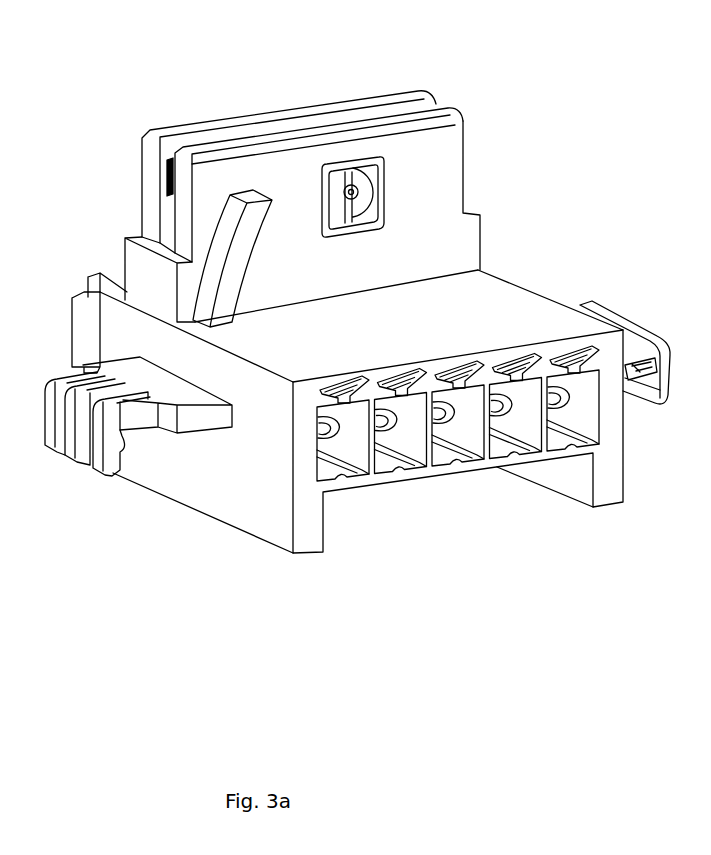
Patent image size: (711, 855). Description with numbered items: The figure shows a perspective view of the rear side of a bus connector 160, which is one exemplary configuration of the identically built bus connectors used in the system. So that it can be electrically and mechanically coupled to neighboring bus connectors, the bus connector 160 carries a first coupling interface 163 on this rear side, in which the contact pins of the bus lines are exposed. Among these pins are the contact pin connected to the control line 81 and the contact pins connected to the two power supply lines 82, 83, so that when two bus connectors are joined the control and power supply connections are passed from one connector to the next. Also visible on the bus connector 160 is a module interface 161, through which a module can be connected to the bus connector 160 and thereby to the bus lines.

The bus connector 160 is at (357, 402).
The module interface 161 is at (272, 107).
The first coupling interface 163 is at (357, 447).
The control line 81 is at (455, 420).
The power supply line 82 is at (567, 405).
The power supply line 83 is at (508, 423).